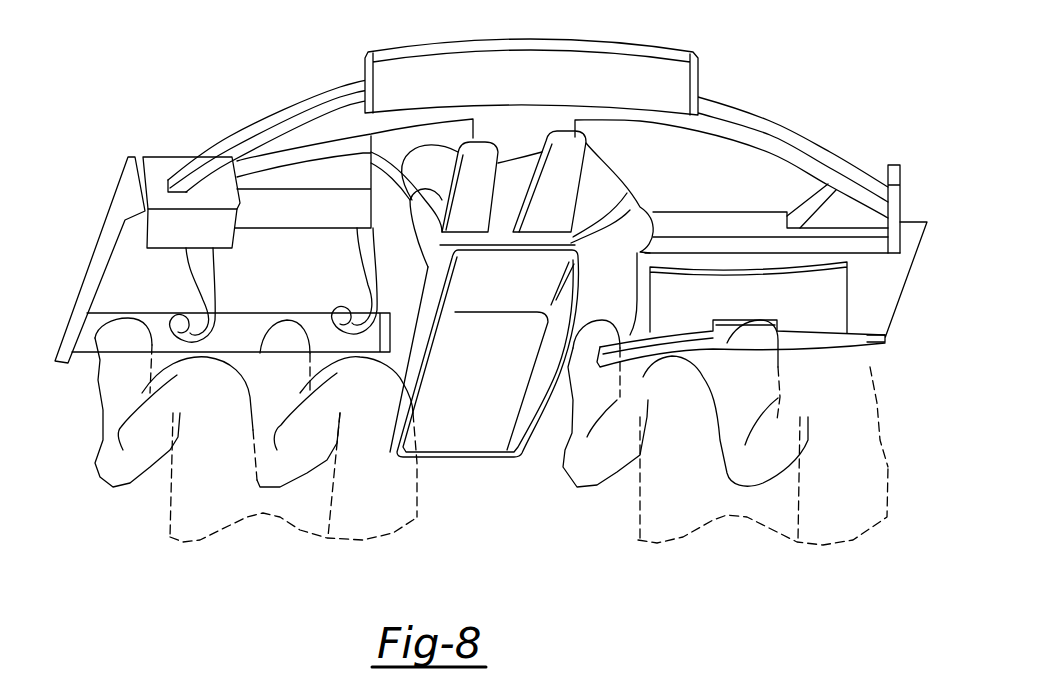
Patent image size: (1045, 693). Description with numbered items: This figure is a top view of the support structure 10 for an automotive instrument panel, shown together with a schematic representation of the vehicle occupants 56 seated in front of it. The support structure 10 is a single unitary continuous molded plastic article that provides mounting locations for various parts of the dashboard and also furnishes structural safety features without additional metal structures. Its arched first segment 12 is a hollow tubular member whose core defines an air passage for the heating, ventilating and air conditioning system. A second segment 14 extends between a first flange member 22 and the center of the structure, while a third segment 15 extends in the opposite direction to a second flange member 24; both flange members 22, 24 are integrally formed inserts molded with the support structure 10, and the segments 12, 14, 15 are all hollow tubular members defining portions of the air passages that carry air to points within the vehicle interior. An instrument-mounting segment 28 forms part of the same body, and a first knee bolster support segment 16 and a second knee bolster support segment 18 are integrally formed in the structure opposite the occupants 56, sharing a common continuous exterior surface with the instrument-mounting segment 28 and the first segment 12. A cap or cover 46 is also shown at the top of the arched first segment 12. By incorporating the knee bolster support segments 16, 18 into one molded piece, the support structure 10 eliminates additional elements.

The support structure 10 is at (112, 110).
The first segment 12 is at (829, 152).
The second segment 14 is at (901, 173).
The third segment 15 is at (169, 162).
The first knee bolster support segment 16 is at (792, 363).
The second knee bolster support segment 18 is at (93, 342).
The first flange member 22 is at (913, 242).
The second flange member 24 is at (122, 190).
The instrument-mounting segment 28 is at (318, 236).
The cap 46 is at (690, 74).
The vehicle occupants 56 is at (180, 510).